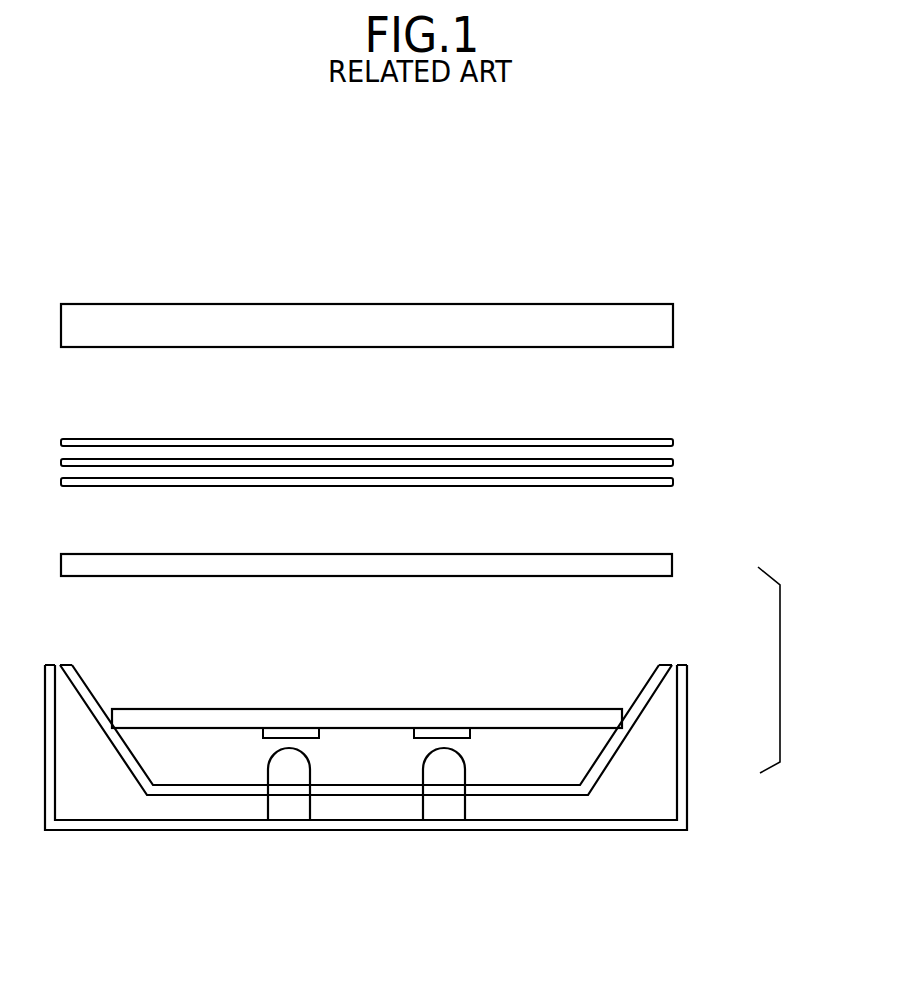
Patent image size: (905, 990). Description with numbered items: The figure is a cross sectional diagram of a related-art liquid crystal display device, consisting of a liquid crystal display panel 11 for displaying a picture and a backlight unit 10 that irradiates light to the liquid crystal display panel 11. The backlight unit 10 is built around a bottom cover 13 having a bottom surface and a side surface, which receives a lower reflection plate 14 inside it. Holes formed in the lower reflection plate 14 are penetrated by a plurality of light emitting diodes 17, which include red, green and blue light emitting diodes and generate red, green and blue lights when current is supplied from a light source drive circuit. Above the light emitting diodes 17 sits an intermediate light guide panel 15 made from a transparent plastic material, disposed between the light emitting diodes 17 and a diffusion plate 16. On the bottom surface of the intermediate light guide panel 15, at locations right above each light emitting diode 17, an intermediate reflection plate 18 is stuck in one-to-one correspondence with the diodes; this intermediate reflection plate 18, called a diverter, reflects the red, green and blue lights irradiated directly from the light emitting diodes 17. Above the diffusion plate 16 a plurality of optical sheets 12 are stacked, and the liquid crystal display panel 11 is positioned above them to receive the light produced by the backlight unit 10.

The backlight unit 10 is at (786, 670).
The liquid crystal display panel 11 is at (657, 316).
The optical sheets 12 is at (685, 436).
The bottom cover 13 is at (682, 770).
The lower reflection plate 14 is at (660, 672).
The intermediate light guide panel 15 is at (607, 720).
The diffusion plate 16 is at (645, 568).
The light emitting diodes 17 is at (289, 778).
The intermediate reflection plate 18 is at (428, 733).